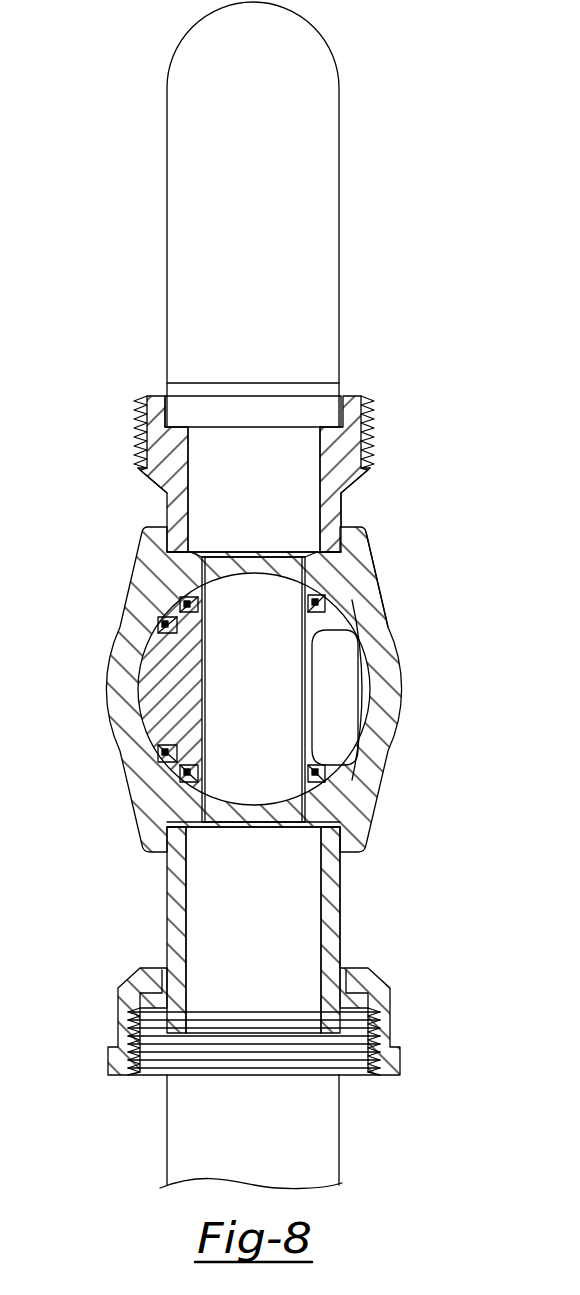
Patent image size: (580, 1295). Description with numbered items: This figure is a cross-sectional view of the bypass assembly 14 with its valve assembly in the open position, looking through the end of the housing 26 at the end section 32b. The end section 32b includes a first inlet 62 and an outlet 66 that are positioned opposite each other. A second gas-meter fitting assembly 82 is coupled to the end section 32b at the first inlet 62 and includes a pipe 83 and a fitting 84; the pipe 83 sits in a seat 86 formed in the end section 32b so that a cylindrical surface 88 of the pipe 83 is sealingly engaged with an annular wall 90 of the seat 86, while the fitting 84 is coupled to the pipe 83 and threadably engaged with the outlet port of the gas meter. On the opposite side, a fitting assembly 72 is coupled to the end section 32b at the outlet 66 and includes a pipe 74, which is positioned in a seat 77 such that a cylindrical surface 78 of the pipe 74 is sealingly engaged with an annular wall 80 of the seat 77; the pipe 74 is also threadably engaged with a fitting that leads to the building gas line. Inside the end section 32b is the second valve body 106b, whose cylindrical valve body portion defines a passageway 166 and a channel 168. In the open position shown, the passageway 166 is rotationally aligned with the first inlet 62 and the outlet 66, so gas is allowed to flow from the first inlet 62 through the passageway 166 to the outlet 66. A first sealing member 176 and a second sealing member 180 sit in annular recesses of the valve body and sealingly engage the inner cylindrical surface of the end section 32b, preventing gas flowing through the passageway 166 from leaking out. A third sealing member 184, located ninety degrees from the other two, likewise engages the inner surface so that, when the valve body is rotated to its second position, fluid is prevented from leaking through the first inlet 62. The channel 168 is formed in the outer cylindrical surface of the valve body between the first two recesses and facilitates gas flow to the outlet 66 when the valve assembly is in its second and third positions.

The bypass assembly 14 is at (103, 583).
The fitting assembly 72 is at (388, 401).
The pipe 74 is at (157, 423).
The seat 77 is at (335, 545).
The cylindrical surface 78 is at (337, 513).
The annular wall 80 is at (168, 535).
The outlet 66 is at (200, 590).
The end section 32b is at (355, 563).
The housing 26 is at (390, 598).
The second valve body 106b is at (160, 685).
The channel 168 is at (310, 672).
The passageway 166 is at (203, 700).
The first sealing member 176 is at (308, 610).
The second sealing member 180 is at (307, 777).
The third sealing member 184 is at (160, 752).
The second gas-meter fitting assembly 82 is at (363, 908).
The first inlet 62 is at (195, 829).
The pipe 83 is at (335, 880).
The seat 86 is at (333, 855).
The cylindrical surface 88 is at (340, 958).
The annular wall 90 is at (183, 840).
The fitting 84 is at (392, 1020).